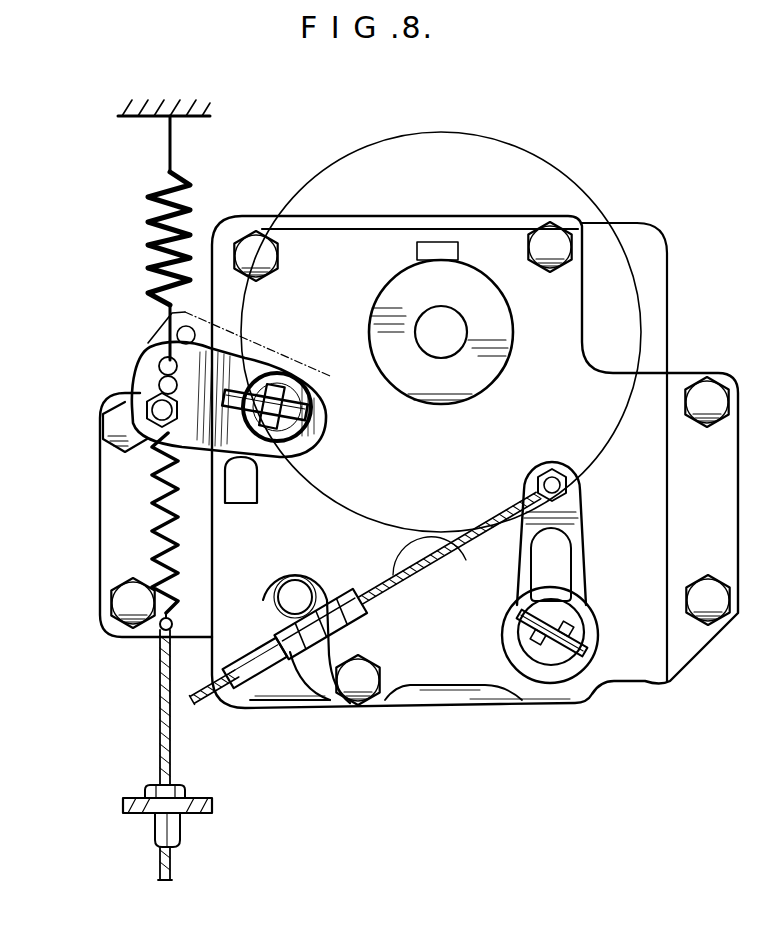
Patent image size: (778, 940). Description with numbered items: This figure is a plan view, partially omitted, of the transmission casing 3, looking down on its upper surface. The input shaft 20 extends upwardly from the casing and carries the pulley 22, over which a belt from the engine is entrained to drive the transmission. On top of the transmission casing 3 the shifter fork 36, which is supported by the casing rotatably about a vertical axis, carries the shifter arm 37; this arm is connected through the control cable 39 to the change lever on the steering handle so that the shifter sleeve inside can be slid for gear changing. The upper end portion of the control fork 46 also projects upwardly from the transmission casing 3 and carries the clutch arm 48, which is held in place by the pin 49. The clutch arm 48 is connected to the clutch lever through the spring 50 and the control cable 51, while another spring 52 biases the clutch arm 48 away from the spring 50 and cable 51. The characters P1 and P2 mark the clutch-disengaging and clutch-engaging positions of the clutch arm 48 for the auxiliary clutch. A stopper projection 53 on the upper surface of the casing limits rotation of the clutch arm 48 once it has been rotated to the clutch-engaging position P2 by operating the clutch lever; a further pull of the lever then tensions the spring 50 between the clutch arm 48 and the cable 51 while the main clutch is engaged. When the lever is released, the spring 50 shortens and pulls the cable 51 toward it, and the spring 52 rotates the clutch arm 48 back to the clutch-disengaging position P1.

The transmission casing 3 is at (643, 660).
The input shaft 20 is at (440, 343).
The pulley 22 is at (568, 174).
The shifter fork 36 is at (540, 657).
The shifter arm 37 is at (565, 510).
The control cable 39 is at (397, 583).
The control fork 46 is at (298, 378).
The clutch arm 48 is at (227, 337).
The pin 49 is at (305, 415).
The spring 50 is at (152, 515).
The control cable 51 is at (170, 748).
The spring 52 is at (152, 203).
The stopper projection 53 is at (238, 479).
The clutch-disengaging position P1 is at (233, 398).
The clutch-engaging position P2 is at (230, 400).